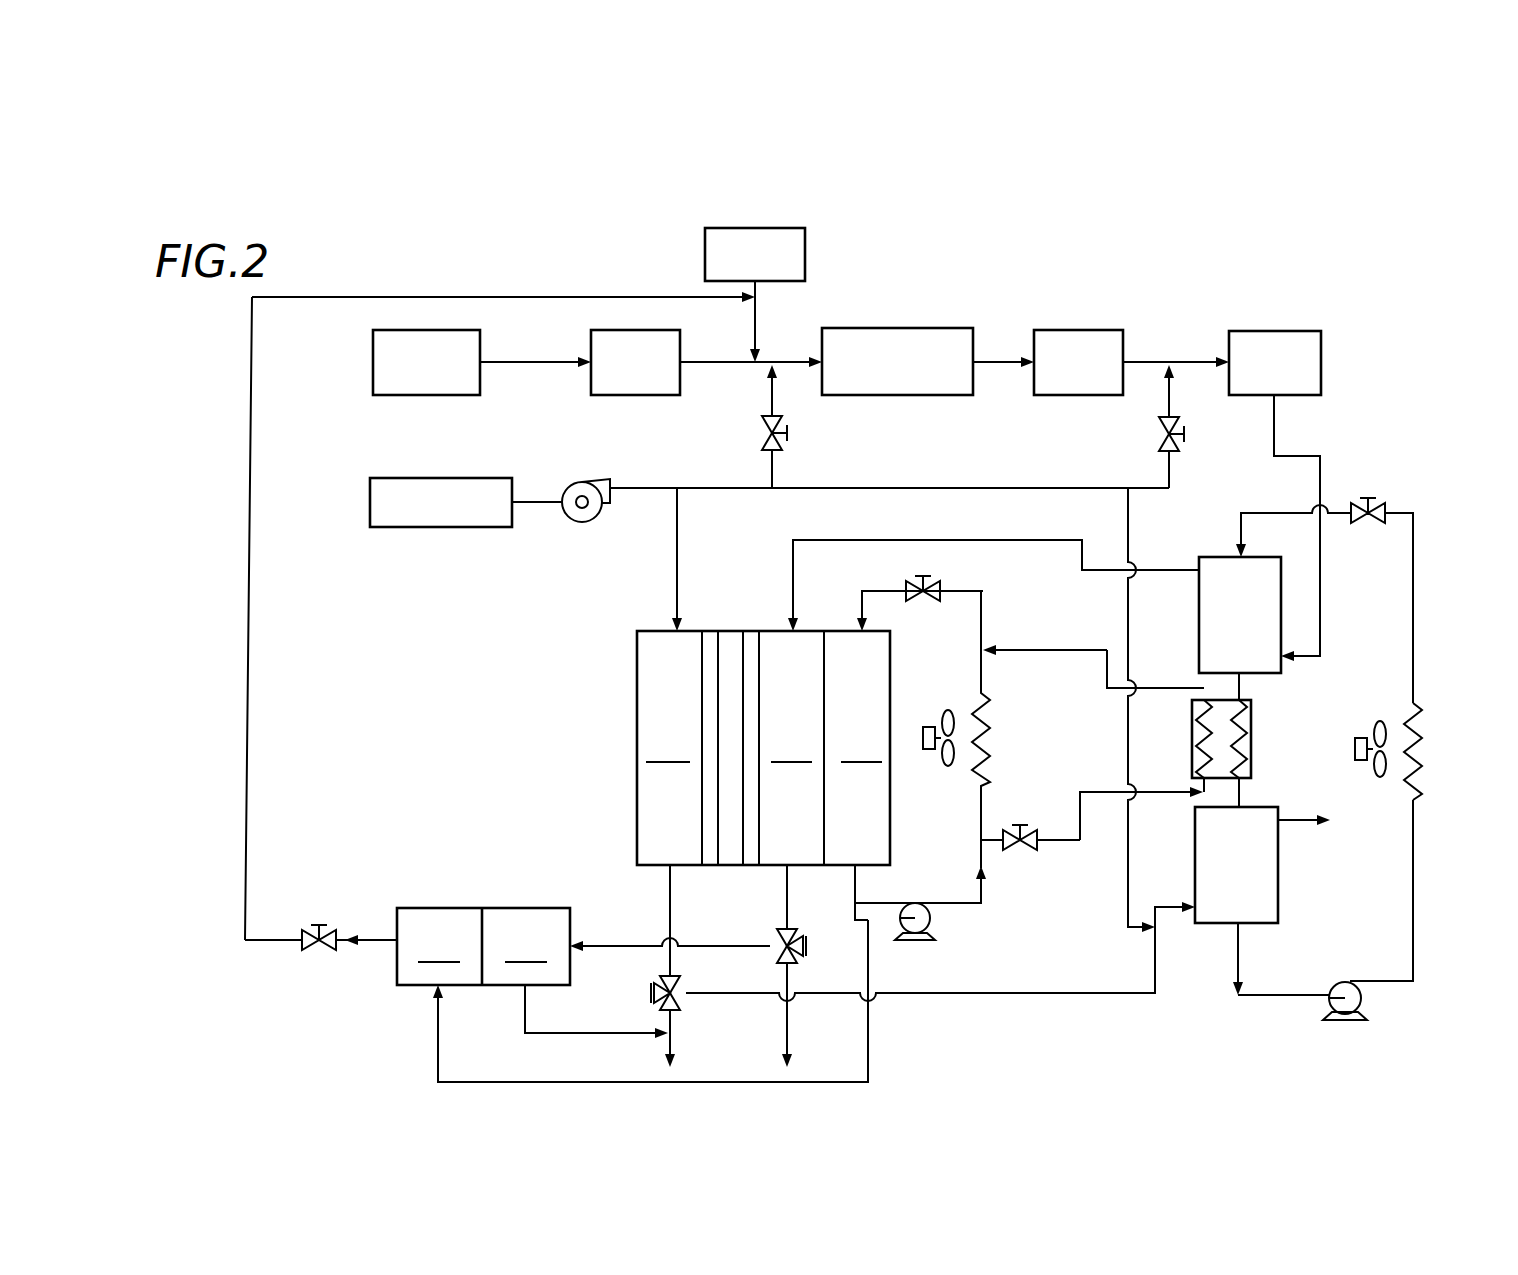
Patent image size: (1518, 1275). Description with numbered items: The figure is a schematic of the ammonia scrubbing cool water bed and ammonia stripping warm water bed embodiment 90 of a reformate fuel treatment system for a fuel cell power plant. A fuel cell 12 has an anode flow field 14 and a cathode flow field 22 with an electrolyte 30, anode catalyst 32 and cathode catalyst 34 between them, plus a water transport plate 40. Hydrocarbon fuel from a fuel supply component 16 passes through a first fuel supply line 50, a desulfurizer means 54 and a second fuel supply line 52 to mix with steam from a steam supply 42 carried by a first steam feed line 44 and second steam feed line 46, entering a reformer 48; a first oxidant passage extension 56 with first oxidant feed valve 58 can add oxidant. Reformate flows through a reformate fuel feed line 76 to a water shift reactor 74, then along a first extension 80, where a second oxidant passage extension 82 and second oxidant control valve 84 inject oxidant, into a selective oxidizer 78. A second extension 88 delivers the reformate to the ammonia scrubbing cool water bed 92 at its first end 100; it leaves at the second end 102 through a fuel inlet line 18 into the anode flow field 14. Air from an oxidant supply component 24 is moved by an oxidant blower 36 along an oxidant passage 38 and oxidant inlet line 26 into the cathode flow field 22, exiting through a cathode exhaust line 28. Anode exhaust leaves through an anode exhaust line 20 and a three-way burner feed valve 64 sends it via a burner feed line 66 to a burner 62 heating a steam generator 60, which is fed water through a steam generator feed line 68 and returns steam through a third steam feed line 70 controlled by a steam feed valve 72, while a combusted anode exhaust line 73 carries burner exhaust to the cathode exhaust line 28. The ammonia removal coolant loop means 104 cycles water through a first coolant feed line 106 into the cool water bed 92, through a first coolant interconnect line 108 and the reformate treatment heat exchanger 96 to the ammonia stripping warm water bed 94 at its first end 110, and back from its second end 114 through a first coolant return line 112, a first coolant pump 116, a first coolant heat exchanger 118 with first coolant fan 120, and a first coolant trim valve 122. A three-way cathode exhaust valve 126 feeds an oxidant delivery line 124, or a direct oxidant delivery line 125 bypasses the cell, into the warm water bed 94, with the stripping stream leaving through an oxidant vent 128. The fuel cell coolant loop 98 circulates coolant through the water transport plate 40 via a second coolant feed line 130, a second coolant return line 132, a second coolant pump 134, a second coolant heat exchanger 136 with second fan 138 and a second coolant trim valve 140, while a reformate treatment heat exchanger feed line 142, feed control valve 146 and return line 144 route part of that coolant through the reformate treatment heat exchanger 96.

The fuel cell 12 is at (605, 652).
The anode flow field 14 is at (797, 748).
The fuel supply component 16 is at (373, 362).
The fuel inlet line 18 is at (838, 540).
The anode exhaust line 20 is at (790, 882).
The cathode flow field 22 is at (667, 746).
The oxidant supply component 24 is at (432, 527).
The oxidant inlet line 26 is at (678, 556).
The cathode exhaust line 28 is at (668, 915).
The electrolyte 30 is at (728, 645).
The anode catalyst 32 is at (752, 850).
The cathode catalyst 34 is at (712, 850).
The oxidant blower 36 is at (587, 522).
The oxidant passage 38 is at (660, 490).
The water transport plate 40 is at (861, 746).
The steam supply 42 is at (705, 272).
The first steam feed line 44 is at (757, 325).
The second steam feed line 46 is at (786, 366).
The reformer 48 is at (903, 335).
The first fuel supply line 50 is at (540, 362).
The second fuel supply line 52 is at (722, 362).
The desulfurizer means 54 is at (650, 383).
The first oxidant passage extension 56 is at (772, 405).
The first oxidant feed valve 58 is at (780, 446).
The steam generator 60 is at (483, 946).
The burner 62 is at (514, 946).
The three-way burner feed valve 64 is at (797, 950).
The burner feed line 66 is at (700, 950).
The steam generator feed line 68 is at (622, 1082).
The third steam feed line 70 is at (250, 782).
The steam feed valve 72 is at (320, 925).
The combusted anode exhaust line 73 is at (562, 1033).
The water shift reactor 74 is at (1093, 335).
The reformate fuel feed line 76 is at (988, 358).
The selective oxidizer 78 is at (1280, 345).
The first extension of the reformate fuel feed line 80 is at (1152, 360).
The second oxidant passage extension 82 is at (1020, 488).
The second oxidant control valve 84 is at (1176, 446).
The second extension of the reformate fuel feed line 88 is at (1277, 428).
The second embodiment of the reformate fuel treatment system 90 is at (1212, 292).
The ammonia scrubbing cool water bed 92 is at (1212, 612).
The ammonia stripping warm water bed 94 is at (1208, 840).
The reformate treatment heat exchanger 96 is at (1192, 745).
The fuel cell coolant loop 98 is at (1015, 612).
The first end of the cool water bed 100 is at (1265, 673).
The second end of the cool water bed 102 is at (1213, 557).
The ammonia removal coolant loop means 104 is at (1393, 885).
The first coolant feed line 106 is at (1445, 590).
The first coolant interconnect line 108 is at (1242, 688).
The first end of the warm water bed 110 is at (1268, 807).
The first coolant return line 112 is at (1275, 995).
The second end of the warm water bed 114 is at (1262, 920).
The first coolant pump 116 is at (1362, 1000).
The first coolant heat exchanger 118 is at (1420, 775).
The first coolant fan 120 is at (1352, 745).
The first coolant trim valve 122 is at (1380, 500).
The oxidant delivery line 124 is at (1155, 955).
The direct oxidant delivery line 125 is at (1120, 922).
The three-way cathode exhaust valve 126 is at (680, 1000).
The oxidant vent 128 is at (1322, 818).
The second coolant feed line 130 is at (892, 591).
The second coolant return line 132 is at (858, 903).
The second coolant pump 134 is at (932, 918).
The second coolant heat exchanger 136 is at (985, 745).
The second fan 138 is at (924, 735).
The second coolant trim valve 140 is at (930, 600).
The reformate treatment heat exchanger feed line 142 is at (1092, 790).
The reformate treatment heat exchanger return line 144 is at (1045, 649).
The reformate treatment heat exchanger feed control valve 146 is at (1010, 828).